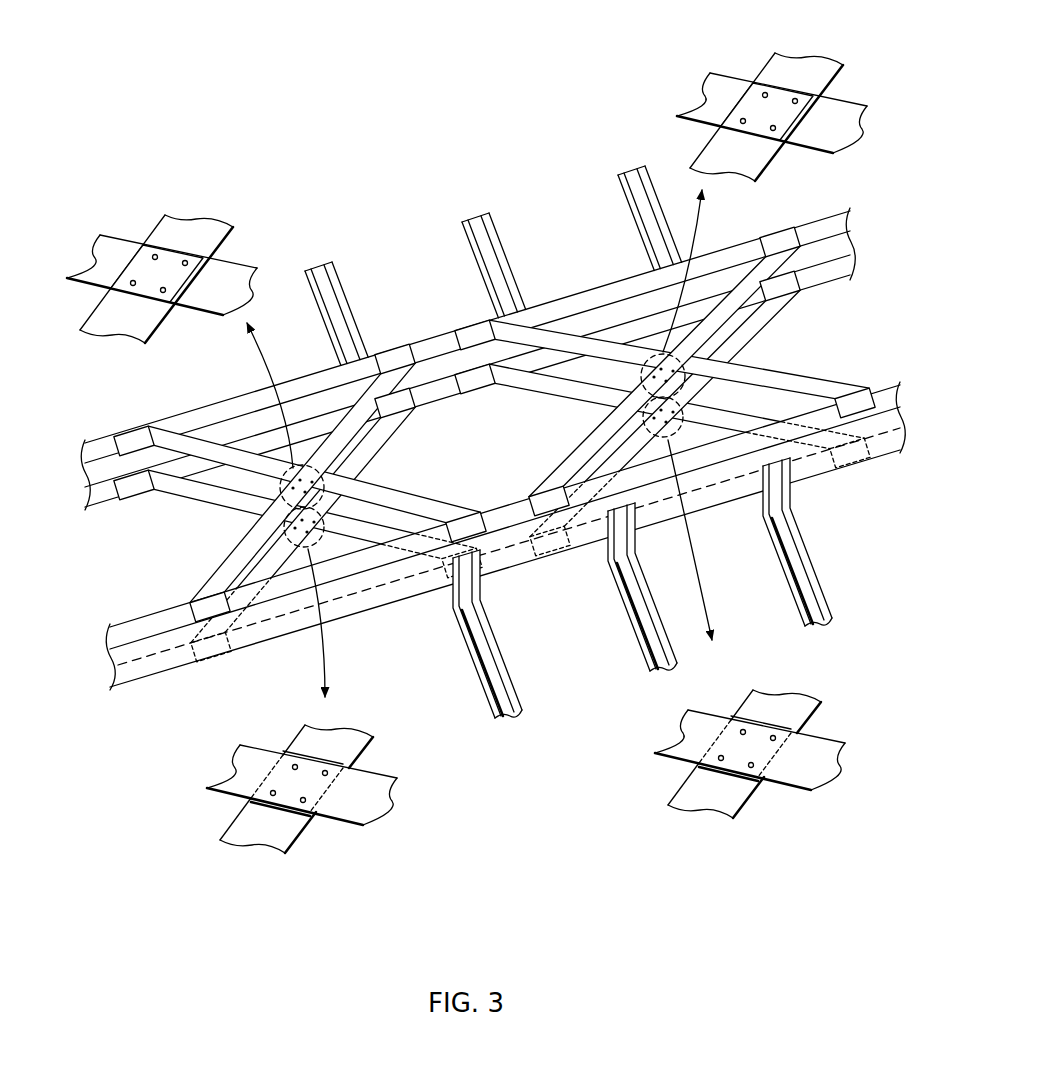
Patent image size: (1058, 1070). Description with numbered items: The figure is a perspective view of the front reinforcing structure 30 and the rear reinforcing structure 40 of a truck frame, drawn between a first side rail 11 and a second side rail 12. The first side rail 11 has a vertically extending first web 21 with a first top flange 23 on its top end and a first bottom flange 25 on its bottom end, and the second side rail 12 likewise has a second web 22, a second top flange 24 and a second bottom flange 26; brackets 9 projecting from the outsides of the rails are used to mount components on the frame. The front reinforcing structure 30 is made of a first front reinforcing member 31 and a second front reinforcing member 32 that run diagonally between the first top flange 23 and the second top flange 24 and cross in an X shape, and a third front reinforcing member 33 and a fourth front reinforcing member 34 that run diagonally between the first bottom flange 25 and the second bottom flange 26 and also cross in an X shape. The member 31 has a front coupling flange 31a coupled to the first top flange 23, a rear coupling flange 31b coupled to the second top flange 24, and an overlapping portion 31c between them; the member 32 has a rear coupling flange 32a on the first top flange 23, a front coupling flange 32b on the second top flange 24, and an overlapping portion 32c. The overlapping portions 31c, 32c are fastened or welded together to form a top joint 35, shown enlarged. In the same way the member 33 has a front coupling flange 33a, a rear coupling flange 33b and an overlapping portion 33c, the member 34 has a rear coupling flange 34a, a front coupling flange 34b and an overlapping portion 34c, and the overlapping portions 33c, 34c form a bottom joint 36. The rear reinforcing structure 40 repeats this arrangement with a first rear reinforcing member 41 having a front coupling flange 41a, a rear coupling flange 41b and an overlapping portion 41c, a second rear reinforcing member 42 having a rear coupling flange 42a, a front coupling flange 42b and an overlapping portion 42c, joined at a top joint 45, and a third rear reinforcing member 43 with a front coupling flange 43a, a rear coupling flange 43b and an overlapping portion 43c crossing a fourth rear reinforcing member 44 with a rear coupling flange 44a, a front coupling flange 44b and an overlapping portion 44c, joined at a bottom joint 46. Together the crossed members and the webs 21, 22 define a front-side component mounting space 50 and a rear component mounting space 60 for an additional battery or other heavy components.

The brackets 9 is at (336, 292).
The first side rail 11 is at (403, 598).
The second side rail 12 is at (297, 376).
The first web 21 is at (133, 690).
The second web 22 is at (88, 466).
The first top flange 23 is at (110, 638).
The second top flange 24 is at (87, 447).
The first bottom flange 25 is at (108, 668).
The second bottom flange 26 is at (88, 495).
The front reinforcing structure 30 is at (162, 546).
The first front reinforcing member 31 is at (225, 243).
The front coupling flange 31a is at (205, 612).
The rear coupling flange 31b is at (395, 352).
The overlapping portion 31c is at (133, 262).
The second front reinforcing member 32 is at (235, 290).
The rear coupling flange 32a is at (468, 517).
The front coupling flange 32b is at (135, 438).
The overlapping portion 32c is at (190, 247).
The third front reinforcing member 33 is at (370, 456).
The front coupling flange 33a is at (190, 665).
The rear coupling flange 33b is at (402, 392).
The overlapping portion 33c is at (317, 808).
The fourth front reinforcing member 34 is at (215, 525).
The rear coupling flange 34a is at (500, 565).
The front coupling flange 34b is at (135, 492).
The overlapping portion 34c is at (313, 758).
The top joint 35 is at (100, 293).
The bottom joint 36 is at (358, 763).
The rear reinforcing structure 40 is at (765, 366).
The first rear reinforcing member 41 is at (833, 80).
The front coupling flange 41a is at (545, 496).
The rear coupling flange 41b is at (783, 240).
The overlapping portion 41c is at (737, 105).
The second rear reinforcing member 42 is at (842, 128).
The rear coupling flange 42a is at (857, 394).
The front coupling flange 42b is at (468, 330).
The overlapping portion 42c is at (795, 83).
The third rear reinforcing member 43 is at (755, 346).
The front coupling flange 43a is at (572, 555).
The rear coupling flange 43b is at (795, 290).
The overlapping portion 43c is at (765, 768).
The fourth rear reinforcing member 44 is at (548, 418).
The rear coupling flange 44a is at (880, 455).
The front coupling flange 44b is at (475, 391).
The overlapping portion 44c is at (760, 728).
The top joint 45 is at (711, 131).
The bottom joint 46 is at (803, 727).
The front-side component mounting space 50 is at (214, 501).
The component mounting space 60 is at (592, 396).